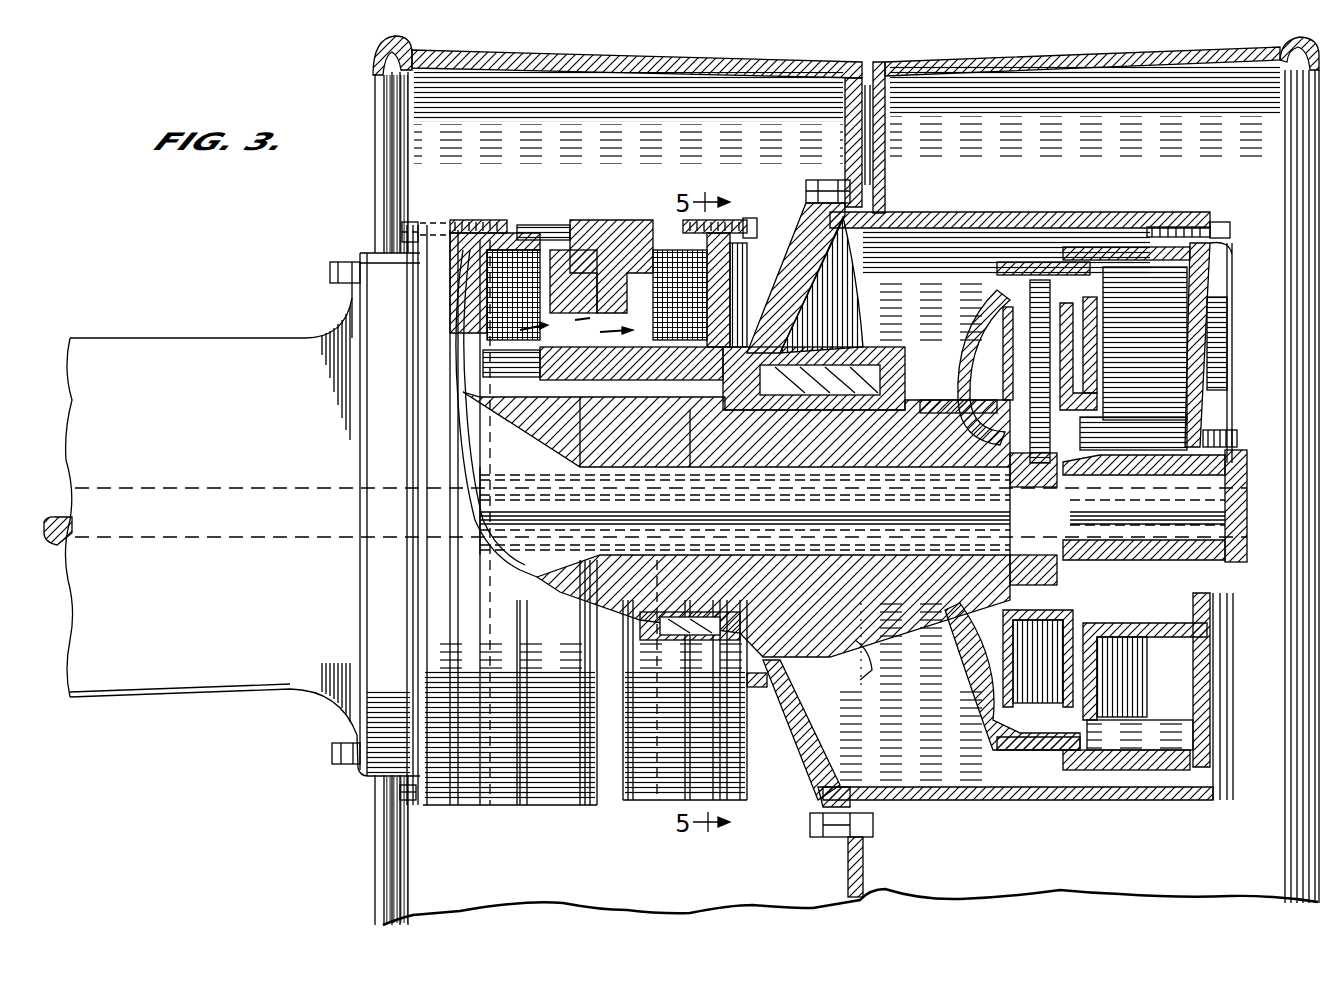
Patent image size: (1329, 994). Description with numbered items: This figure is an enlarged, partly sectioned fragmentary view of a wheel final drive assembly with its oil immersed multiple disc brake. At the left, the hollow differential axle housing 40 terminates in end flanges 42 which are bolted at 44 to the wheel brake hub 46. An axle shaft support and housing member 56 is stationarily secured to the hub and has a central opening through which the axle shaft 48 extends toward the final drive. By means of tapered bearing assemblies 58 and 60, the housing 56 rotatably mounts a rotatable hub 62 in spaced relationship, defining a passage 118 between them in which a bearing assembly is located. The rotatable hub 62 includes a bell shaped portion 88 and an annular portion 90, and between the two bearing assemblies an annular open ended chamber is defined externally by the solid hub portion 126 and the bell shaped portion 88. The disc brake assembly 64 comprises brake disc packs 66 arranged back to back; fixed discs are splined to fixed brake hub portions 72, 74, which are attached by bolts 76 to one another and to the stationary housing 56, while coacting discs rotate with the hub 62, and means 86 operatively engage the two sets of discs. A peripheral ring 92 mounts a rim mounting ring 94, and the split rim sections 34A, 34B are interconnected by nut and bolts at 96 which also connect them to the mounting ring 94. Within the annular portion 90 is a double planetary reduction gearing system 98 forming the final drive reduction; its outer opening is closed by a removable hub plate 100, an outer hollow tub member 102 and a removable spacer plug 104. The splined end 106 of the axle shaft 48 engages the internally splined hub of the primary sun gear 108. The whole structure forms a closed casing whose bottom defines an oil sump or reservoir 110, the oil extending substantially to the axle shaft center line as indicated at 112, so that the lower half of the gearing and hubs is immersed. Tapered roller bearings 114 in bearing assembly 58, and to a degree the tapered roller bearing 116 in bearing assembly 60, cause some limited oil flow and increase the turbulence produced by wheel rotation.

The split rim section 34A is at (683, 65).
The split rim section 34B is at (1065, 58).
The nut and bolts 96 is at (897, 72).
The wheel brake hub 46 is at (452, 215).
The bolts 76 is at (402, 233).
The fixed brake hub portion 74 is at (490, 220).
The disc brake assembly 64 is at (532, 210).
The brake disc packs 66 is at (528, 268).
The engaging means 86 is at (597, 233).
The peripheral ring 92 is at (810, 207).
The annular portion 90 is at (1047, 213).
The double planetary reduction gearing system 98 is at (1127, 283).
The removable hub plate 100 is at (1208, 287).
The solid hub portion 126 is at (800, 362).
The primary sun gear 108 is at (1027, 432).
The outer hollow tub member 102 is at (1237, 453).
The removable spacer plug 104 is at (1232, 500).
The splined end 106 is at (1010, 487).
The axle shaft 48 is at (745, 511).
The tapered roller bearings 114 is at (690, 410).
The passage 118 is at (593, 390).
The oil level 112 is at (495, 503).
The axle shaft support and housing member 56 is at (520, 572).
The tapered bearing assembly 58 is at (700, 612).
The tapered bearing assembly 60 is at (868, 640).
The rotatable hub 62 is at (770, 712).
The bell shaped portion 88 is at (805, 772).
The tapered roller bearing 116 is at (897, 660).
The oil sump or reservoir 110 is at (942, 770).
The rim mounting ring 94 is at (865, 870).
The hollow differential axle housing 40 is at (212, 678).
The end flanges 42 is at (377, 650).
The bolts 44 is at (345, 765).
The fixed brake hub portion 72 is at (435, 807).